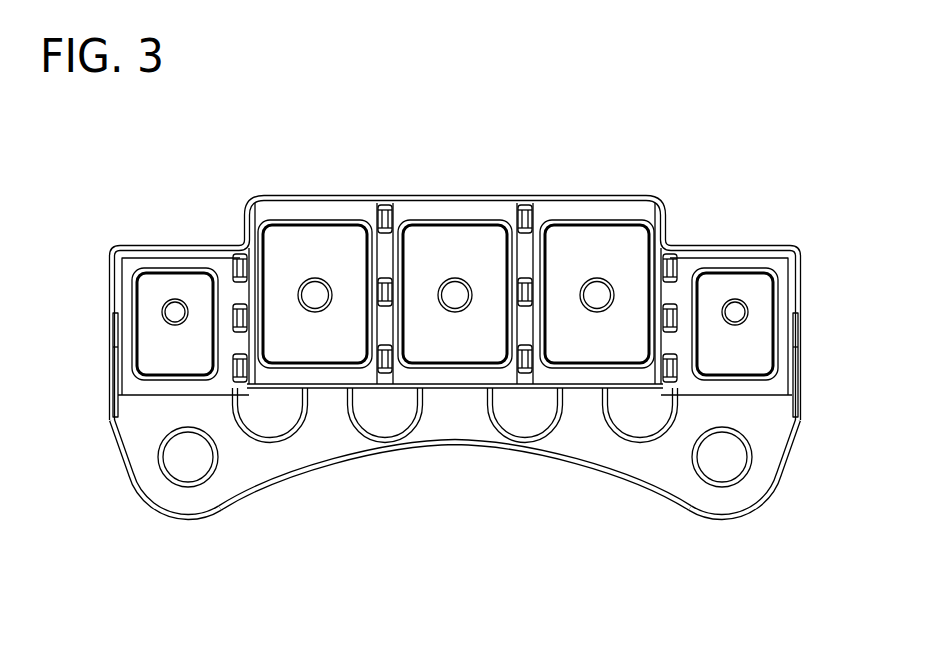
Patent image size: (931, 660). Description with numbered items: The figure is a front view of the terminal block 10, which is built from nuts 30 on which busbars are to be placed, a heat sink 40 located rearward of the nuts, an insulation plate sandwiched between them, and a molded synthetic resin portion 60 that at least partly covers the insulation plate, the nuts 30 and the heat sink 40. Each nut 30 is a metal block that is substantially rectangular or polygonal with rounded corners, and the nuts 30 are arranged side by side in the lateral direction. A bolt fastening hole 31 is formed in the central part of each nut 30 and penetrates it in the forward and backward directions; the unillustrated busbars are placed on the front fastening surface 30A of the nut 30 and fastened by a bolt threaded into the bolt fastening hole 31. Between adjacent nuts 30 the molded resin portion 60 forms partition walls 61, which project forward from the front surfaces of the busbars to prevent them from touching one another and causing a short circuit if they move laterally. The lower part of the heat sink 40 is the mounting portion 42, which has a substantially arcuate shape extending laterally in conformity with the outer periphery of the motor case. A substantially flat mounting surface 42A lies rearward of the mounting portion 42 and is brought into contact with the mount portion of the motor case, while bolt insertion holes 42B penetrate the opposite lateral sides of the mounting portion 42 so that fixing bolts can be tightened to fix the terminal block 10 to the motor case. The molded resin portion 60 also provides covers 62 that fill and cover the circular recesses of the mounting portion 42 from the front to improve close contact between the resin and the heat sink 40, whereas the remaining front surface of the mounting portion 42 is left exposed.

The terminal block 10 is at (464, 372).
The nut 30 is at (312, 220).
The front fastening surface 30A is at (592, 248).
The bolt fastening hole 31 is at (170, 300).
The heat sink 40 is at (540, 456).
The mounting portion 42 is at (464, 489).
The mounting surface 42A is at (455, 489).
The bolt insertion hole 42B is at (168, 473).
The molded synthetic resin portion 60 is at (455, 275).
The partition wall 61 is at (387, 256).
The cover 62 is at (383, 420).